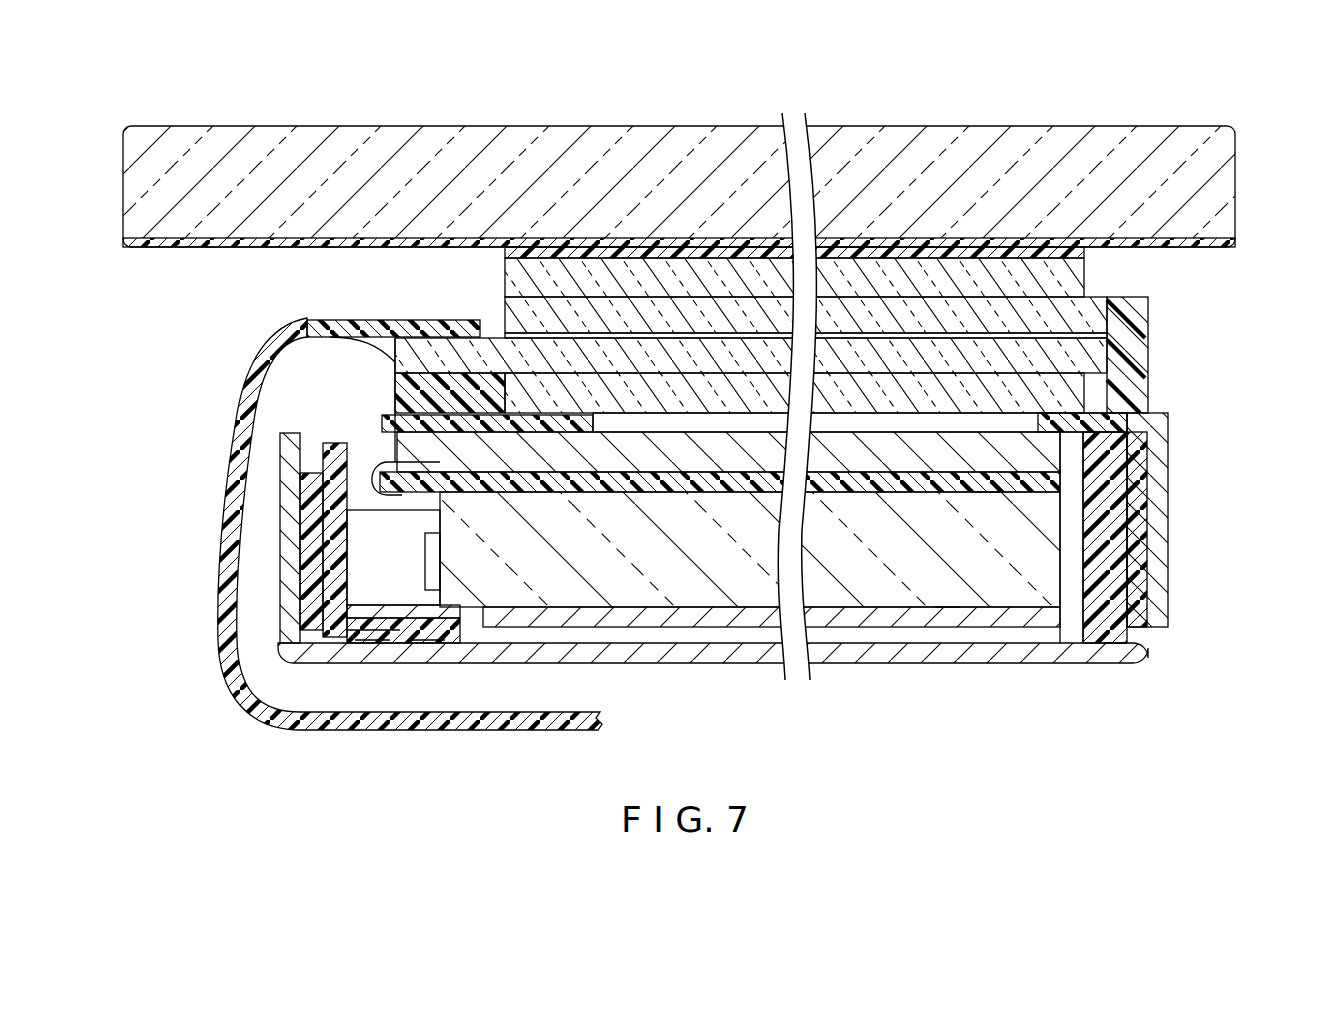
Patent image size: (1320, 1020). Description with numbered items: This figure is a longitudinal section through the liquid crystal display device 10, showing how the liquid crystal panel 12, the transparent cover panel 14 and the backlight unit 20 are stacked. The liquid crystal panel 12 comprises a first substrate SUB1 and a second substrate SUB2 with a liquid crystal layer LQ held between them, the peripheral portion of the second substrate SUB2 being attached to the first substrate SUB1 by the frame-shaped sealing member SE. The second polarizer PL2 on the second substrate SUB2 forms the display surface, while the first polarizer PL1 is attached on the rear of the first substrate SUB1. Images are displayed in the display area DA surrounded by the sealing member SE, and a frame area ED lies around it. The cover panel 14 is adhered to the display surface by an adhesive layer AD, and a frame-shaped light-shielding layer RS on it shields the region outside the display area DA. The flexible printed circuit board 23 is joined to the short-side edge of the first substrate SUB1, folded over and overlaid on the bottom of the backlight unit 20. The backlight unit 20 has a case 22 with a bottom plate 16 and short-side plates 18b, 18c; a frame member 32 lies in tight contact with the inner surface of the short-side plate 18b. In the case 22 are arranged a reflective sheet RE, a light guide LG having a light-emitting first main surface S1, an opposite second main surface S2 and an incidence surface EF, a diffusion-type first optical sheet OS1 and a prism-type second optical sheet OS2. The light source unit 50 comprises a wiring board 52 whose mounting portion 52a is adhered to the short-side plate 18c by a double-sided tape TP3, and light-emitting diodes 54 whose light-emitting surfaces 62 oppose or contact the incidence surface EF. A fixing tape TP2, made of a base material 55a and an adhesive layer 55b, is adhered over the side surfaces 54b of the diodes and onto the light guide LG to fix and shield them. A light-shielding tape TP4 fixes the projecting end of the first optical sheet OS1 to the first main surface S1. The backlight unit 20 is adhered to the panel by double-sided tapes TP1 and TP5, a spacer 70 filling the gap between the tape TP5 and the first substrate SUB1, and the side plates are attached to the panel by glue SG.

The liquid crystal display device 10 is at (165, 366).
The liquid crystal panel 12 is at (850, 336).
The cover panel 14 is at (334, 138).
The bottom plate 16 is at (855, 668).
The short-side plate 18b is at (1100, 488).
The short-side plate 18c is at (288, 525).
The backlight unit 20 is at (676, 672).
The case 22 is at (546, 675).
The flexible printed circuit board 23 is at (250, 388).
The frame member 32 is at (1100, 640).
The light source unit 50 is at (317, 608).
The wiring board 52 is at (372, 585).
The mounting portion 52a is at (310, 565).
The light-emitting diode 54 is at (365, 612).
The side surface 54b is at (370, 628).
The base material 55a is at (428, 645).
The adhesive layer 55b is at (372, 645).
The light-emitting surface 62 is at (455, 548).
The spacer 70 is at (432, 388).
The frame area ED is at (123, 120).
The display area DA is at (1004, 357).
The sealing member SE is at (543, 330).
The adhesive layer AD is at (667, 252).
The light-shielding layer RS is at (192, 249).
The second polarizer PL2 is at (1073, 278).
The second substrate SUB2 is at (1090, 305).
The first substrate SUB1 is at (1090, 358).
The liquid crystal layer LQ is at (975, 338).
The first polarizer PL1 is at (870, 394).
The double-sided tape TP1 is at (1098, 421).
The fixing tape TP2 is at (410, 733).
The double-sided tape TP3 is at (293, 495).
The light-shielding tape TP4 is at (394, 496).
The double-sided tape TP5 is at (427, 415).
The first optical sheet OS1 is at (1010, 487).
The second optical sheet OS2 is at (1045, 452).
The glue SG is at (1158, 572).
The light guide LG is at (735, 595).
The reflective sheet RE is at (905, 628).
The first main surface S1 is at (988, 493).
The second main surface S2 is at (948, 608).
The incidence surface EF is at (432, 640).